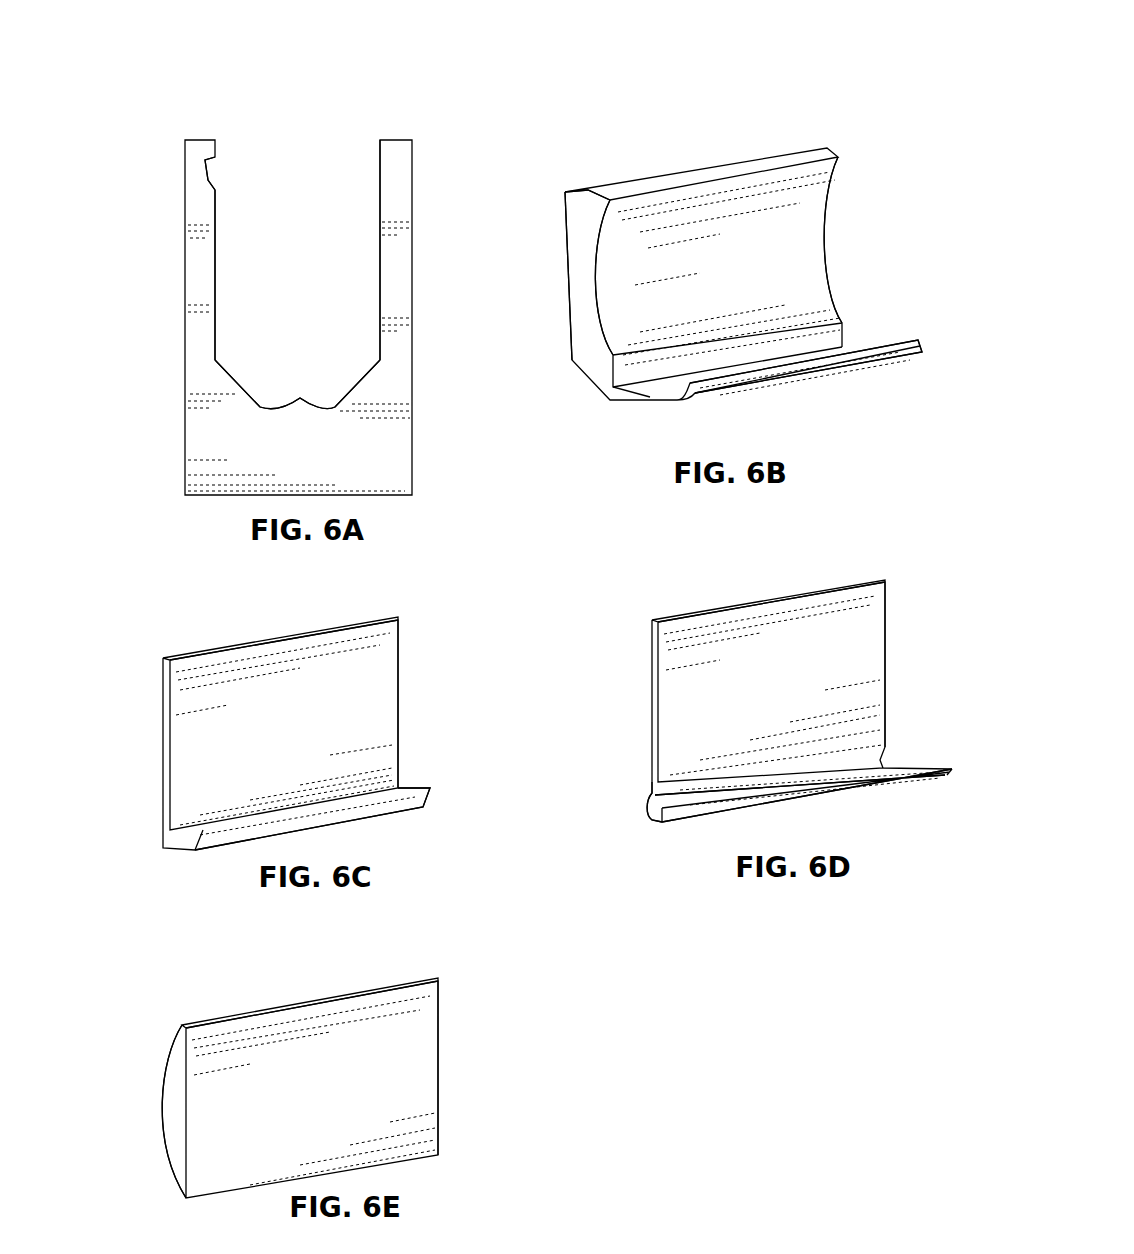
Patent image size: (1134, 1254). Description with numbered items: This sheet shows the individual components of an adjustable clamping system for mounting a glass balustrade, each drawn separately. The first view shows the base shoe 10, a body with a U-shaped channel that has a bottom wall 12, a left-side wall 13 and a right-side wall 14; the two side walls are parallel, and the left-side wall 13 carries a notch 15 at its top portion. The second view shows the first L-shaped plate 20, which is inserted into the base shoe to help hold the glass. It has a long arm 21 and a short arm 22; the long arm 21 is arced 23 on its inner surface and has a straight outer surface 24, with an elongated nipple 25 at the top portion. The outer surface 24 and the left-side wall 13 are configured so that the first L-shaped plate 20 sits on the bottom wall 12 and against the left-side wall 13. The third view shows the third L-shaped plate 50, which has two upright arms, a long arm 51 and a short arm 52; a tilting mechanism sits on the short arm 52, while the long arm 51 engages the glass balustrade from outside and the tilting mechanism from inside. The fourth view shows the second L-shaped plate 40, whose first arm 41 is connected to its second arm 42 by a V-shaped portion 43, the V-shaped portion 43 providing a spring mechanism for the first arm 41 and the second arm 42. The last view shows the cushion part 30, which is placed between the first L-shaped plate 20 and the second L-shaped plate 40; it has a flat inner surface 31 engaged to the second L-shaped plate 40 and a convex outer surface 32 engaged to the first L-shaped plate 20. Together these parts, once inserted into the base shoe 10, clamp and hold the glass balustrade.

In FIG. 6A, the base shoe 10 is at (343, 173).
In FIG. 6A, the bottom wall 12 is at (285, 418).
In FIG. 6A, the left-side wall 13 is at (215, 272).
In FIG. 6A, the right-side wall 14 is at (380, 308).
In FIG. 6A, the notch 15 is at (213, 178).
In FIG. 6B, the first L-shaped plate 20 is at (863, 120).
In FIG. 6B, the long arm 21 is at (800, 212).
In FIG. 6B, the short arm 22 is at (885, 357).
In FIG. 6B, the arced inner surface 23 is at (610, 293).
In FIG. 6B, the outer surface 24 is at (571, 268).
In FIG. 6B, the elongated nipple 25 is at (563, 192).
In FIG. 6C, the third L-shaped plate 50 is at (443, 635).
In FIG. 6C, the long arm 51 is at (380, 655).
In FIG. 6C, the short arm 52 is at (400, 803).
In FIG. 6D, the second L-shaped plate 40 is at (885, 578).
In FIG. 6D, the first arm 41 is at (857, 657).
In FIG. 6D, the second arm 42 is at (678, 812).
In FIG. 6D, the V-shaped portion 43 is at (650, 792).
In FIG. 6E, the cushion part 30 is at (222, 1005).
In FIG. 6E, the flat inner surface 31 is at (438, 1057).
In FIG. 6E, the convex outer surface 32 is at (158, 1077).